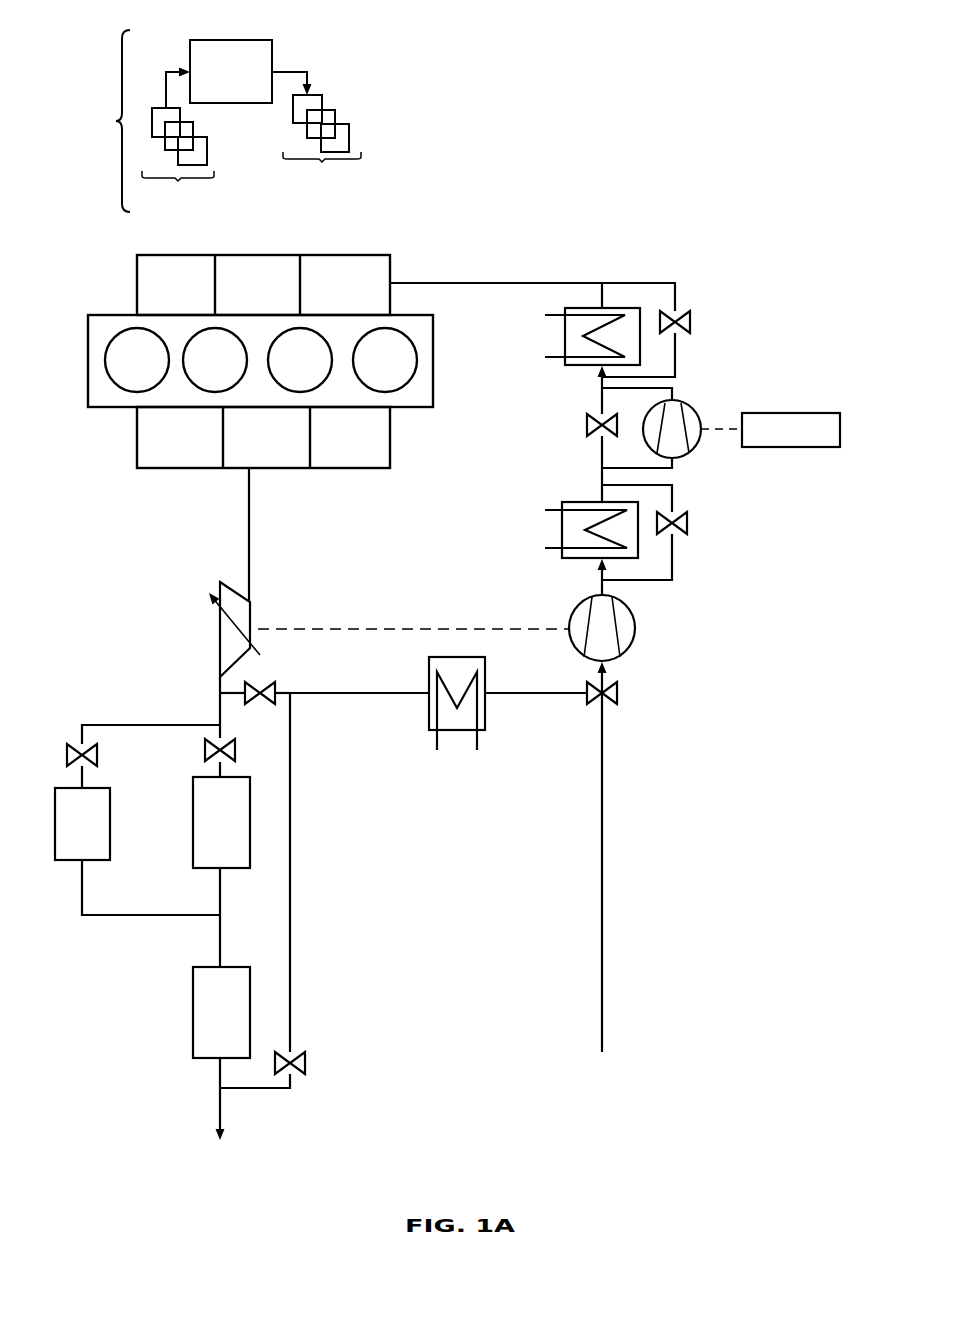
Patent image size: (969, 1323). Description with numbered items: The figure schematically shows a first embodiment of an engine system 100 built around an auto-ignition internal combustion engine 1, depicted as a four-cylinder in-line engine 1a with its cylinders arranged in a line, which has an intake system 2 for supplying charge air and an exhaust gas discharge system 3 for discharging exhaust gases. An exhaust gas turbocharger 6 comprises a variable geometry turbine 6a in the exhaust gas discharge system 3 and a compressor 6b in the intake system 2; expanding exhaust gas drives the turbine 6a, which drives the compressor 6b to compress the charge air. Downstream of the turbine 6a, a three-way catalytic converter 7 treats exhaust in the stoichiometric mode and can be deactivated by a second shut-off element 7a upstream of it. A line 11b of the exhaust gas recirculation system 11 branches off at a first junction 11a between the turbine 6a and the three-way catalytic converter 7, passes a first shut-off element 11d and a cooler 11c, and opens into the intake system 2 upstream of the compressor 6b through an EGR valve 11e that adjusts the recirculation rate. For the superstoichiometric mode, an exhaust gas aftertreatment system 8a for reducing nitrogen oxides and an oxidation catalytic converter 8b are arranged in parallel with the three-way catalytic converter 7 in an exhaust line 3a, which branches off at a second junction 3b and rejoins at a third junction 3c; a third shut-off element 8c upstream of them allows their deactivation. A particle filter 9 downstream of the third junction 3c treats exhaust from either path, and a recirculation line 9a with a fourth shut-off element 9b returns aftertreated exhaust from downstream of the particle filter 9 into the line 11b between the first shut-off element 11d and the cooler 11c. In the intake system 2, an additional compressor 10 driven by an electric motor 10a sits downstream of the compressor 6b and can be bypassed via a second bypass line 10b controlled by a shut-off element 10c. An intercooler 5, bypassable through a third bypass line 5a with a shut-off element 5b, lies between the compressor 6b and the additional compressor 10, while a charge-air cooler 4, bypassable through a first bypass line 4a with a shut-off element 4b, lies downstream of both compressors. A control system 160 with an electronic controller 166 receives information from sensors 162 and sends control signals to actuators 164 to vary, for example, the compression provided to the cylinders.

The engine system 100 is at (738, 54).
The control system 160 is at (116, 121).
The sensors 162 is at (178, 138).
The actuators 164 is at (316, 130).
The electronic controller 166 is at (231, 71).
The auto-ignition internal combustion engine 1 is at (317, 314).
The four-cylinder in-line engine 1a is at (402, 219).
The intake system 2 is at (754, 634).
The exhaust gas discharge system 3 is at (203, 804).
The exhaust line 3a is at (218, 889).
The second junction 3b is at (220, 725).
The third junction 3c is at (222, 915).
The charge-air cooler 4 is at (572, 333).
The first bypass line 4a is at (650, 283).
The shut-off element 4b is at (690, 322).
The intercooler 5 is at (572, 530).
The third bypass line 5a is at (675, 502).
The shut-off element 5b is at (680, 530).
The exhaust gas turbocharger 6 is at (451, 603).
The turbine 6a is at (238, 612).
The compressor 6b is at (596, 623).
The three-way catalytic converter 7 is at (98, 826).
The second shut-off element 7a is at (74, 748).
The exhaust gas aftertreatment system 8a is at (181, 815).
The oxidation catalytic converter 8b is at (208, 832).
The third shut-off element 8c is at (207, 750).
The particle filter 9 is at (205, 1020).
The recirculation line 9a is at (291, 967).
The fourth shut-off element 9b is at (304, 1070).
The additional compressor 10 is at (686, 403).
The electric motor 10a is at (782, 428).
The second bypass line 10b is at (598, 457).
The shut-off element 10c is at (585, 425).
The exhaust gas recirculation system 11 is at (506, 730).
The first junction 11a is at (220, 693).
The line 11b is at (520, 694).
The cooler 11c is at (458, 667).
The first shut-off element 11d is at (274, 686).
The EGR valve 11e is at (617, 693).